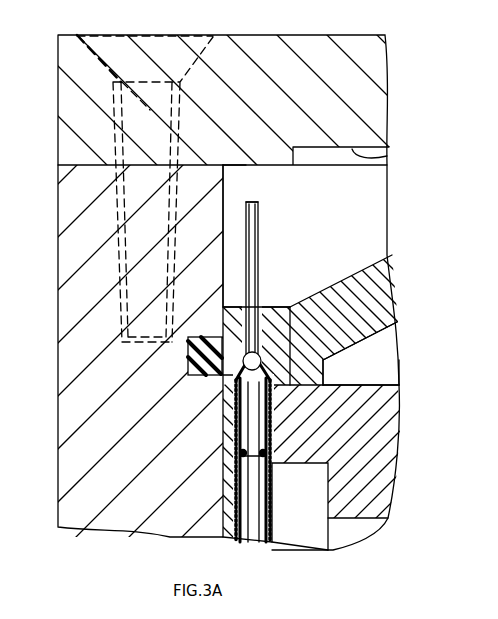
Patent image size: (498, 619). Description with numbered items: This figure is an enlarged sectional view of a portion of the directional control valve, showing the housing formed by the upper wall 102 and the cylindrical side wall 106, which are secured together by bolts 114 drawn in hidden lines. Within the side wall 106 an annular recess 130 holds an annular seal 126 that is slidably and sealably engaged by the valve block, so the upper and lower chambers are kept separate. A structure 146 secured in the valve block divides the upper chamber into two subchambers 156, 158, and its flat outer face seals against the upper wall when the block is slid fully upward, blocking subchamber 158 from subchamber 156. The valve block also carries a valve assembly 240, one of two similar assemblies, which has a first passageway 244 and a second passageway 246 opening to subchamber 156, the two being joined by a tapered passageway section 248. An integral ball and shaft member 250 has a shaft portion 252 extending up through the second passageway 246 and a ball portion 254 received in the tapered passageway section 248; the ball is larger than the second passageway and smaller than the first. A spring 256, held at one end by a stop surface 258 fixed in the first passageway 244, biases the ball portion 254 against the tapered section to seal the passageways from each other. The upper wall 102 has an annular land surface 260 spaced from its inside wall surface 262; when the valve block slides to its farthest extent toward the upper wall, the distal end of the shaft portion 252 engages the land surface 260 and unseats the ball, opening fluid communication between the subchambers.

The upper wall 102 is at (290, 52).
The cylindrical side wall 106 is at (78, 205).
The bolts 114 is at (147, 33).
The annular seal 126 is at (195, 380).
The annular recess 130 is at (200, 357).
The structure 146 is at (348, 293).
The subchamber 156 is at (360, 210).
The subchamber 158 is at (400, 355).
The valve assembly 240 is at (220, 482).
The first passageway 244 is at (275, 545).
The second passageway 246 is at (285, 306).
The tapered passageway section 248 is at (295, 362).
The integral ball and shaft member 250 is at (268, 240).
The shaft portion 252 is at (262, 208).
The ball portion 254 is at (342, 356).
The spring 256 is at (232, 451).
The stop surface 258 is at (262, 462).
The annular land surface 260 is at (268, 167).
The inside wall surface 262 is at (372, 159).